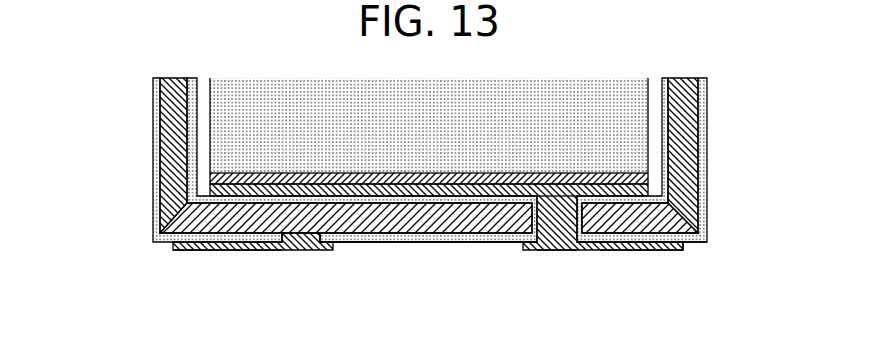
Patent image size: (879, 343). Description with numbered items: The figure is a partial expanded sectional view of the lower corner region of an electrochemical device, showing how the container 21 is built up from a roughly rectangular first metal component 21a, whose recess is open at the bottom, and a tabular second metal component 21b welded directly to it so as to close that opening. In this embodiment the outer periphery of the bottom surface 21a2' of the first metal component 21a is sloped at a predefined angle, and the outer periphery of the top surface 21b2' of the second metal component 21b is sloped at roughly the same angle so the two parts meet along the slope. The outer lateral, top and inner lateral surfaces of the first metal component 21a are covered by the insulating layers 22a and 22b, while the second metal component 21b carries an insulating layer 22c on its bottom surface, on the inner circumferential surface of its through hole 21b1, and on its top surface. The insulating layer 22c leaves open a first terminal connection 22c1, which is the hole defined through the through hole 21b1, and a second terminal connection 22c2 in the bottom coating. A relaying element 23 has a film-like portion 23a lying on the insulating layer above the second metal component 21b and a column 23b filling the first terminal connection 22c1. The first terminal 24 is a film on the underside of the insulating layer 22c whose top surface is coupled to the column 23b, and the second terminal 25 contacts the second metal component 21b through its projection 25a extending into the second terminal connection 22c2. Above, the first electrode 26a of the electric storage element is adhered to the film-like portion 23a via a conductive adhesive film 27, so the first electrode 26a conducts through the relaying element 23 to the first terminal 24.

The container 21 is at (72, 167).
The first metal component 21a is at (306, 201).
The second metal component 21b is at (166, 222).
The outer periphery of bottom surface 21a2' is at (689, 160).
The through hole 21b1 is at (516, 243).
The outer periphery of top surface 21b2' is at (674, 269).
The insulating layer 22a is at (155, 100).
The insulating layer 22b is at (187, 131).
The insulating layer 22c is at (345, 246).
The first terminal connection 22c1 is at (577, 237).
The second terminal connection 22c2 is at (267, 249).
The relaying element 23 is at (383, 178).
The film-like portion 23a is at (451, 205).
The column 23b is at (556, 246).
The first terminal 24 is at (669, 251).
The second terminal 25 is at (188, 252).
The projection 25a is at (298, 249).
The first electrode 26a is at (624, 127).
The conductive adhesive film 27 is at (412, 186).